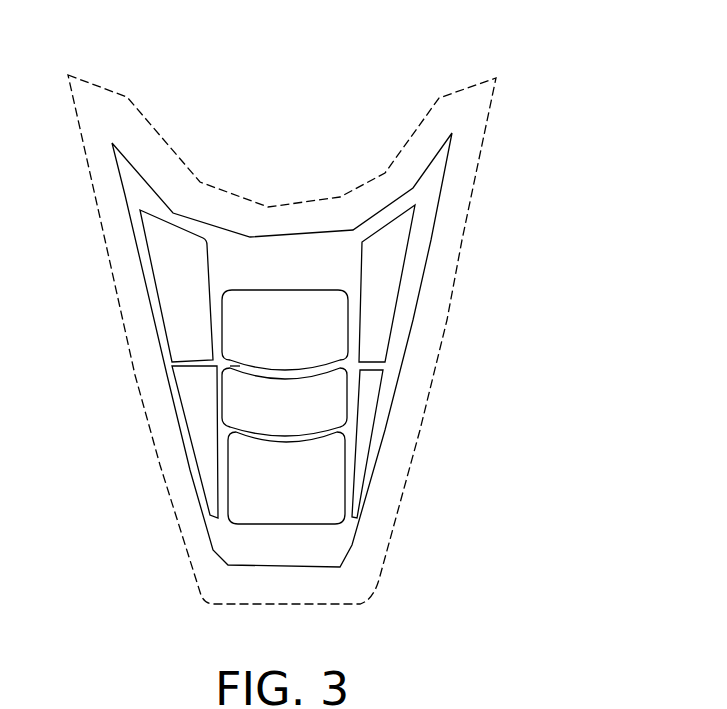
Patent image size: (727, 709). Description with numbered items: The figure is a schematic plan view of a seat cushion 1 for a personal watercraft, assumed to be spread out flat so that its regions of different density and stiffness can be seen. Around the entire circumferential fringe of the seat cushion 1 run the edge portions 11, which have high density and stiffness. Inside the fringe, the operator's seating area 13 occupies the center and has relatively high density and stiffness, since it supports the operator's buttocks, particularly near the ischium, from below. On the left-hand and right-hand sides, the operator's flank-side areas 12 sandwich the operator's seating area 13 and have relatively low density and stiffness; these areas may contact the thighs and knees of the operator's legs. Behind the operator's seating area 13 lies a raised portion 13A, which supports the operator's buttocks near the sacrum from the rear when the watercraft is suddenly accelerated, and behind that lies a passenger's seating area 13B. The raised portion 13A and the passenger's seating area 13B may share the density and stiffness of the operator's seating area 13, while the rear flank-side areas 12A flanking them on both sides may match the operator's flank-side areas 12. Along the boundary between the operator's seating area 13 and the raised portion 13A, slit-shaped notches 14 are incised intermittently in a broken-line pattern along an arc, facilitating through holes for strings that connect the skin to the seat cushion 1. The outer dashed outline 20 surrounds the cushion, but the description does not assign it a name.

The seat cushion 1 is at (505, 98).
The edge portions 11 is at (442, 248).
The operator's flank-side areas 12 is at (170, 270).
The rear flank-side areas 12A is at (203, 415).
The operator's seating area 13 is at (310, 340).
The raised portion 13A is at (308, 397).
The passenger's seating area 13B is at (303, 485).
The notches 14 is at (265, 376).
The outer cowl 20 is at (135, 143).